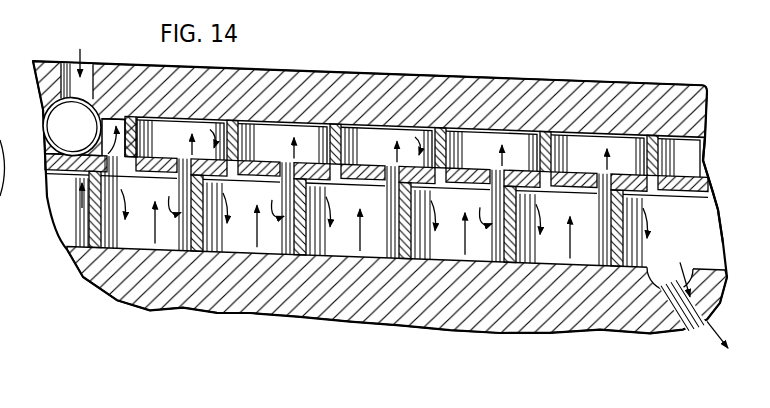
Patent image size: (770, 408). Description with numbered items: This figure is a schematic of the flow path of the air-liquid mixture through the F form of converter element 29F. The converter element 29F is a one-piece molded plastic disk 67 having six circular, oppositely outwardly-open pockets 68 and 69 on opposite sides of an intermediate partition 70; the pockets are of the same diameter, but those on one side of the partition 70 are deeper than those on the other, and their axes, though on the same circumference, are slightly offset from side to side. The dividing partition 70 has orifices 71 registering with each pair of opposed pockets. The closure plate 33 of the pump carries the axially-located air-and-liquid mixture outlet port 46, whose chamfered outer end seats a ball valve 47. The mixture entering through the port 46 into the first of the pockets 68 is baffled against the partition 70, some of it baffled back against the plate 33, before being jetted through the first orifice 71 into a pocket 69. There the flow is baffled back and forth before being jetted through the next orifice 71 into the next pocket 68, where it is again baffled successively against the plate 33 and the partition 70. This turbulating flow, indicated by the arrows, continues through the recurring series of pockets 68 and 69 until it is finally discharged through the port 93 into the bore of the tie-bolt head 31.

The tie-bolt head 31 is at (447, 308).
The closure plate 33 is at (517, 86).
The air-and-liquid mixture outlet port 46 is at (89, 69).
The ball valve 47 is at (62, 105).
The one-piece molded plastic disk 67 is at (40, 252).
The pockets 68 is at (505, 147).
The pockets 69 is at (270, 238).
The intermediate partition 70 is at (257, 162).
The orifices 71 is at (122, 162).
The port 93 is at (703, 308).
The converter element 29F is at (760, 167).